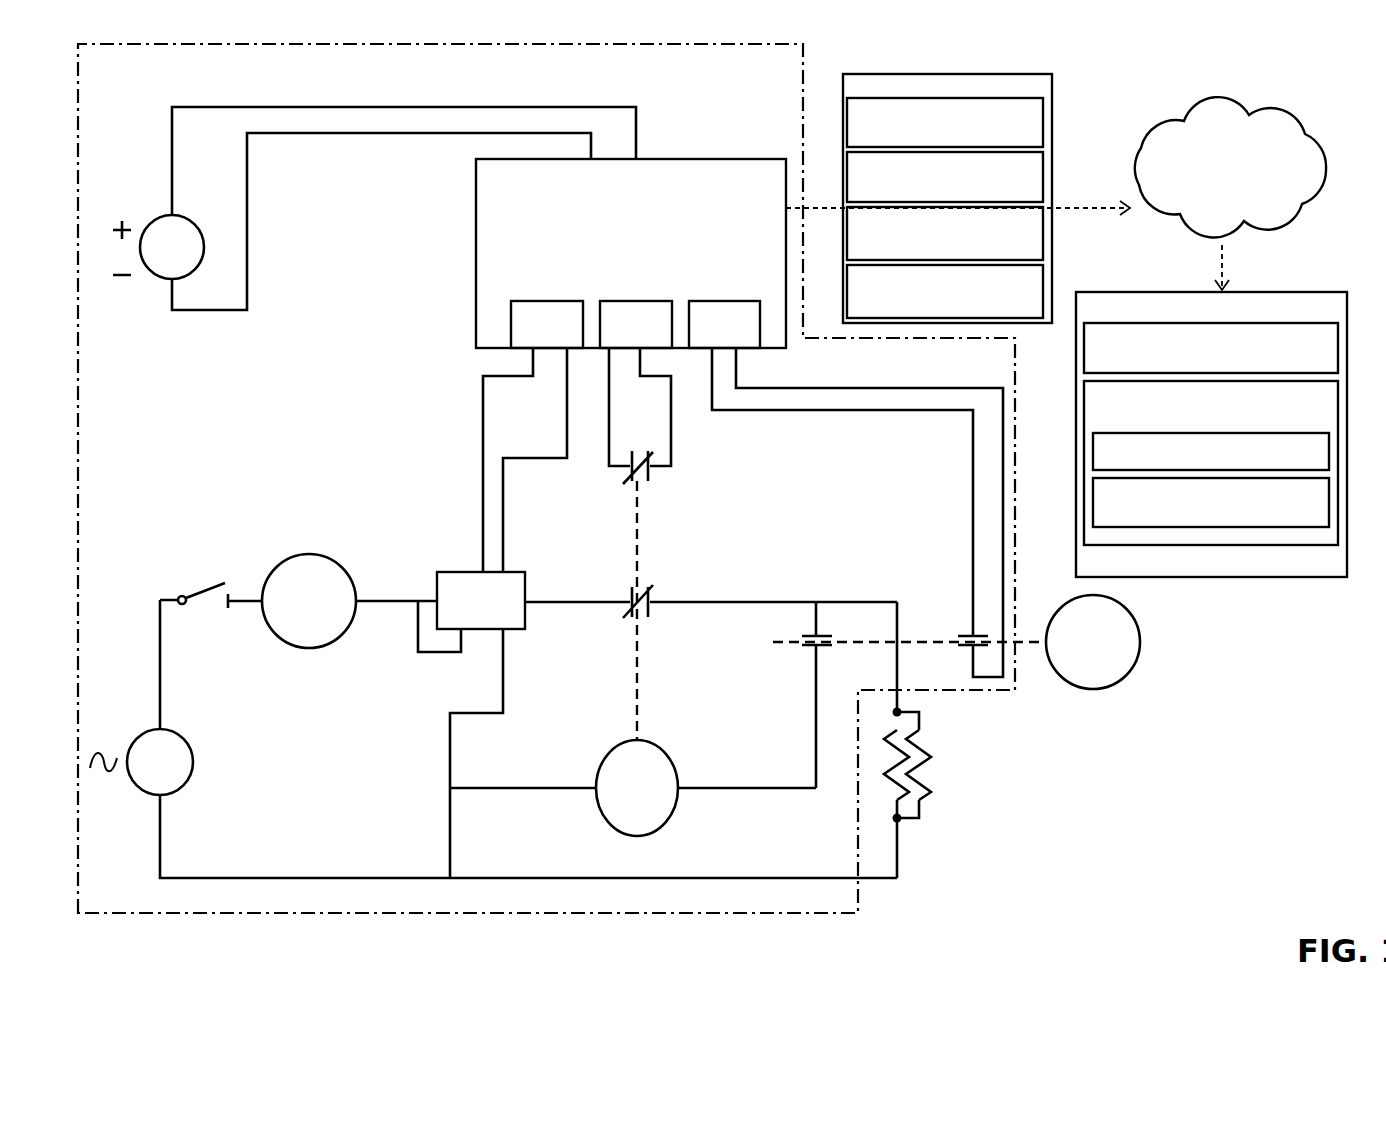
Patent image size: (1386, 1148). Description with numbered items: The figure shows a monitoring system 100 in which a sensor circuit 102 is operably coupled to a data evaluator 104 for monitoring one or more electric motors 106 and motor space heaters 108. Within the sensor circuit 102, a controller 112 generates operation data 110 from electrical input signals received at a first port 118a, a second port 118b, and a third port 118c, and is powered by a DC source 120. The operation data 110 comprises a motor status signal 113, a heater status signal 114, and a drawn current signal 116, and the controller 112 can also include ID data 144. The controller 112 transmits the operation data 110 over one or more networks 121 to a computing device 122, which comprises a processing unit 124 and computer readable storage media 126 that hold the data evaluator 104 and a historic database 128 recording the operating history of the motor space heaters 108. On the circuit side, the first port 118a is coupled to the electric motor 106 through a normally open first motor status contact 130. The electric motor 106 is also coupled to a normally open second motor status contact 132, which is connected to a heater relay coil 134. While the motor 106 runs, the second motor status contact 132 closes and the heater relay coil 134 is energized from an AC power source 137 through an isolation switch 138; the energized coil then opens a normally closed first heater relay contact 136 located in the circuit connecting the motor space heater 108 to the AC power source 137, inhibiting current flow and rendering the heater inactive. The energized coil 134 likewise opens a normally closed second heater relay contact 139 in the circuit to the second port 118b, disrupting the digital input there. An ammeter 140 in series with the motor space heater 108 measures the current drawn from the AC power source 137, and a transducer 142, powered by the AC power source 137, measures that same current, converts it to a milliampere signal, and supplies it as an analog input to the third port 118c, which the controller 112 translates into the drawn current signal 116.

The monitoring system 100 is at (1220, 802).
The sensor circuit 102 is at (546, 478).
The data evaluator 104 is at (1211, 451).
The electric motor 106 is at (1093, 642).
The motor space heater 108 is at (960, 768).
The operation data 110 is at (958, 198).
The controller 112 is at (631, 253).
The motor status signal 113 is at (945, 122).
The heater status signal 114 is at (945, 177).
The drawn current signal 116 is at (945, 233).
The first port 118a is at (724, 324).
The second port 118b is at (636, 324).
The third port 118c is at (547, 324).
The DC source 120 is at (374, 208).
The network 121 is at (1230, 193).
The computing device 122 is at (1211, 434).
The processing unit 124 is at (1211, 348).
The computer readable storage media 126 is at (1211, 463).
The historic database 128 is at (1211, 502).
The first motor status contact 130 is at (950, 616).
The second motor status contact 132 is at (796, 663).
The heater relay coil 134 is at (633, 788).
The first heater relay contact 136 is at (664, 570).
The AC power source 137 is at (493, 739).
The isolation switch 138 is at (172, 566).
The second heater relay contact 139 is at (660, 487).
The ammeter 140 is at (332, 601).
The transducer 142 is at (471, 725).
The ID data 144 is at (945, 291).